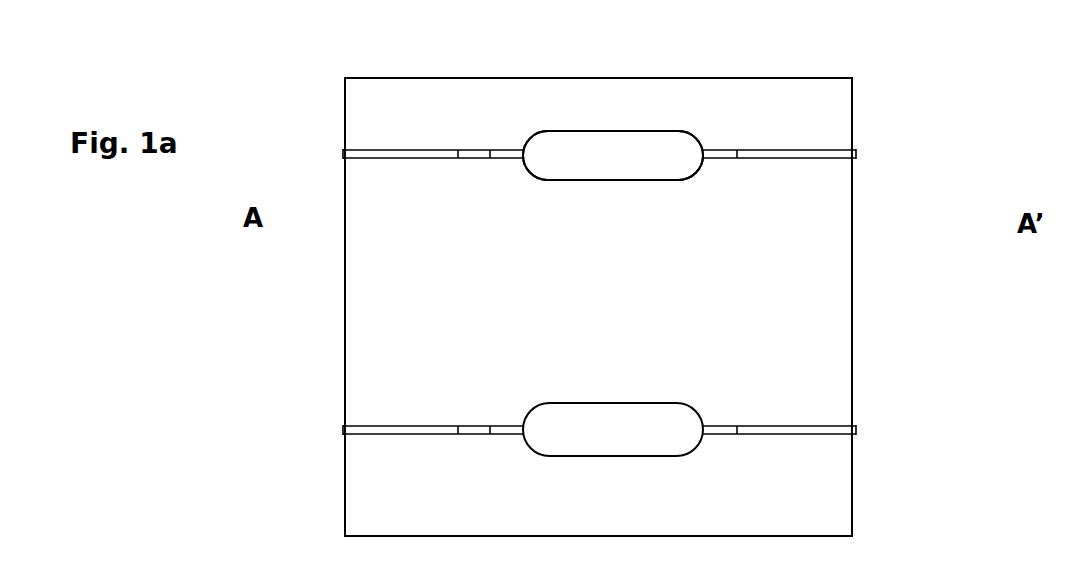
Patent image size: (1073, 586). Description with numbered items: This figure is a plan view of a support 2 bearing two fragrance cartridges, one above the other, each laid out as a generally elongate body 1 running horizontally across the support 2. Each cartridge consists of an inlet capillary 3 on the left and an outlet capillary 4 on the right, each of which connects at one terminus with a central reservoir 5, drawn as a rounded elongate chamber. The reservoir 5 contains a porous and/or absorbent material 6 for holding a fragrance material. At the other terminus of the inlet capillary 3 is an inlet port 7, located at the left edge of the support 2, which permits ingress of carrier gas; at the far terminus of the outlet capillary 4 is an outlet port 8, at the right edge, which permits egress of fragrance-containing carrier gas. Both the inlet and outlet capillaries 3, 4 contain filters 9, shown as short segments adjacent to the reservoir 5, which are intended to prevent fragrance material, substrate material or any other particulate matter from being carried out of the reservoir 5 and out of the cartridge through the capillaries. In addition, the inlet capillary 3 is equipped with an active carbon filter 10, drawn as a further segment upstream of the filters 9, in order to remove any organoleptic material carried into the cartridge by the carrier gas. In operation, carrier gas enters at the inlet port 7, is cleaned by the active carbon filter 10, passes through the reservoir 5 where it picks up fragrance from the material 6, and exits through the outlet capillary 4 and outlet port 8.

The elongate body 1 is at (713, 178).
The support 2 is at (853, 218).
The inlet capillary 3 is at (390, 142).
The outlet capillary 4 is at (803, 142).
The reservoir 5 is at (525, 181).
The porous and/or absorbent material 6 is at (575, 443).
The inlet port 7 is at (340, 152).
The outlet port 8 is at (853, 155).
The filters 9 is at (714, 140).
The active carbon filter 10 is at (466, 148).